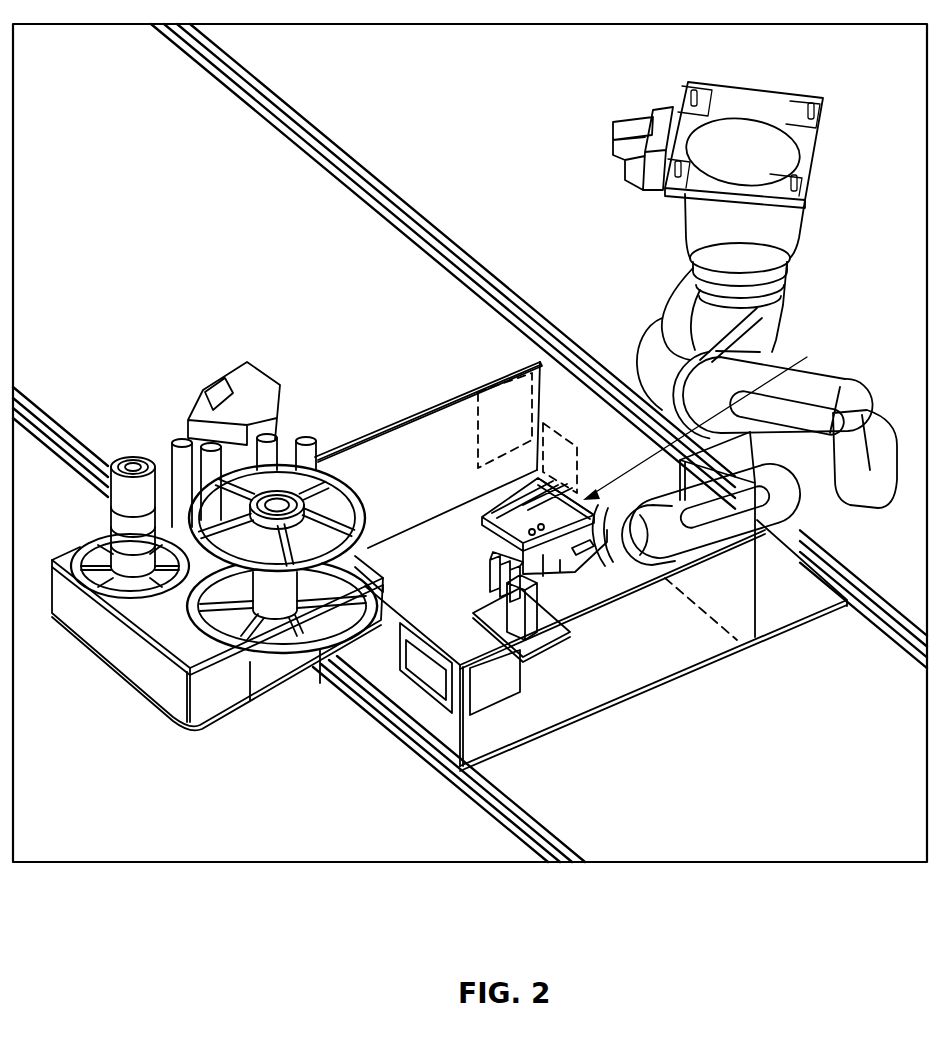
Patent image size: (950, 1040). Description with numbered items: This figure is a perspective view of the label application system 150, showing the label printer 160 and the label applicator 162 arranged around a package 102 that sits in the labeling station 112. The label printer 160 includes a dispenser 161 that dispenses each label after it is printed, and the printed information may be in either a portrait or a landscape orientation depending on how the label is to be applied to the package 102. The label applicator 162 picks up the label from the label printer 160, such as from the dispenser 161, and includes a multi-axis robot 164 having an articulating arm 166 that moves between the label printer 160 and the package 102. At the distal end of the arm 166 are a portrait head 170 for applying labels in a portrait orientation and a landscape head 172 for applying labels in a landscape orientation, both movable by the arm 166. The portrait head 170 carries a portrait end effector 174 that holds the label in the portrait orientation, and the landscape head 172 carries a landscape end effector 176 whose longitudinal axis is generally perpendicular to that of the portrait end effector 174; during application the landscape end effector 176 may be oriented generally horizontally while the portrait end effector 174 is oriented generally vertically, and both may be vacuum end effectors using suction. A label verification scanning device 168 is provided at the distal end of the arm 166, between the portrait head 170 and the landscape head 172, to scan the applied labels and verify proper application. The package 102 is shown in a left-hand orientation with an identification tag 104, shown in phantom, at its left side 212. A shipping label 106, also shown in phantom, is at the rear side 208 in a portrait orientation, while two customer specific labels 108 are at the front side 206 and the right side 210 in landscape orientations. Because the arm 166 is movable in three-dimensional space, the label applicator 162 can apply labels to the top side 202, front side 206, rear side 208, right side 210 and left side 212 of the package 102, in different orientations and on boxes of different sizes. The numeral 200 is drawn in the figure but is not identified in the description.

The package 102 is at (587, 687).
The identification tag 104 is at (580, 445).
The shipping label 106 is at (478, 390).
The customer specific labels 108 is at (490, 687).
The labeling station 112 is at (544, 92).
The label application system 150 is at (148, 717).
The label printer 160 is at (117, 641).
The dispenser 161 is at (280, 400).
The label applicator 162 is at (774, 241).
The multi-axis robot 164 is at (760, 76).
The articulating arm 166 is at (840, 430).
The label verification scanning device 168 is at (568, 648).
The portrait head 170 is at (600, 680).
The landscape head 172 is at (807, 357).
The portrait end effector 174 is at (513, 657).
The landscape end effector 176 is at (515, 512).
The station 200 is at (371, 464).
The top side 202 is at (433, 440).
The front side 206 is at (667, 652).
The rear side 208 is at (340, 445).
The right side 210 is at (402, 688).
The left side 212 is at (795, 550).